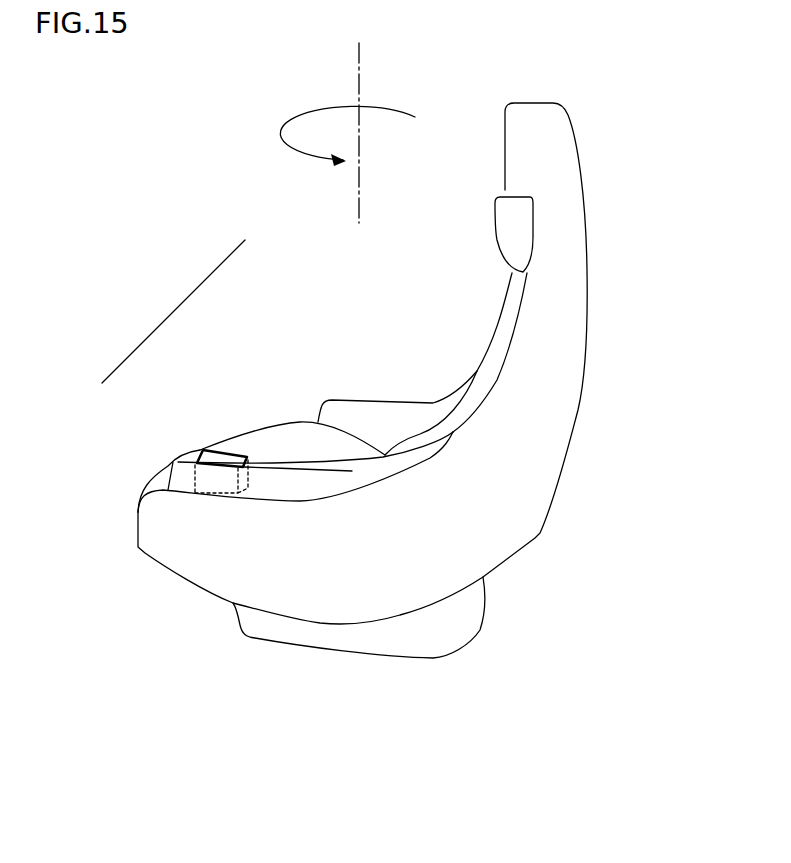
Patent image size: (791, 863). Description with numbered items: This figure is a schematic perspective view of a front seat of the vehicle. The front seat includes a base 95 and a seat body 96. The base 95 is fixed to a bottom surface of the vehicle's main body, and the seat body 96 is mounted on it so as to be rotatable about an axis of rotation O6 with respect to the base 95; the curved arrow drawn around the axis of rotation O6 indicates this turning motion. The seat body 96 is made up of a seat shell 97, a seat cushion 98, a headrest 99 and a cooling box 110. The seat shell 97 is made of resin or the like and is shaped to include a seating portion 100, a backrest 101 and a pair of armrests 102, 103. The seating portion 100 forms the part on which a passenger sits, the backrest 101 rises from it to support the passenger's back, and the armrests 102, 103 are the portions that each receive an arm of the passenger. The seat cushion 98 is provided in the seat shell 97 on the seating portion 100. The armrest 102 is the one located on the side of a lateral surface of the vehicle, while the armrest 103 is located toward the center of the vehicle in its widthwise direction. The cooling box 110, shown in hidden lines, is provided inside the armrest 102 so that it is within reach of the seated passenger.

The axis of rotation O6 is at (361, 63).
The base 95 is at (465, 620).
The seat body 96 is at (163, 322).
The seat shell 97 is at (320, 522).
The seat cushion 98 is at (285, 432).
The headrest 99 is at (507, 190).
The seating portion 100 is at (363, 590).
The backrest 101 is at (568, 378).
The armrest 102 is at (167, 466).
The armrest 103 is at (370, 416).
The cooling box 110 is at (245, 458).